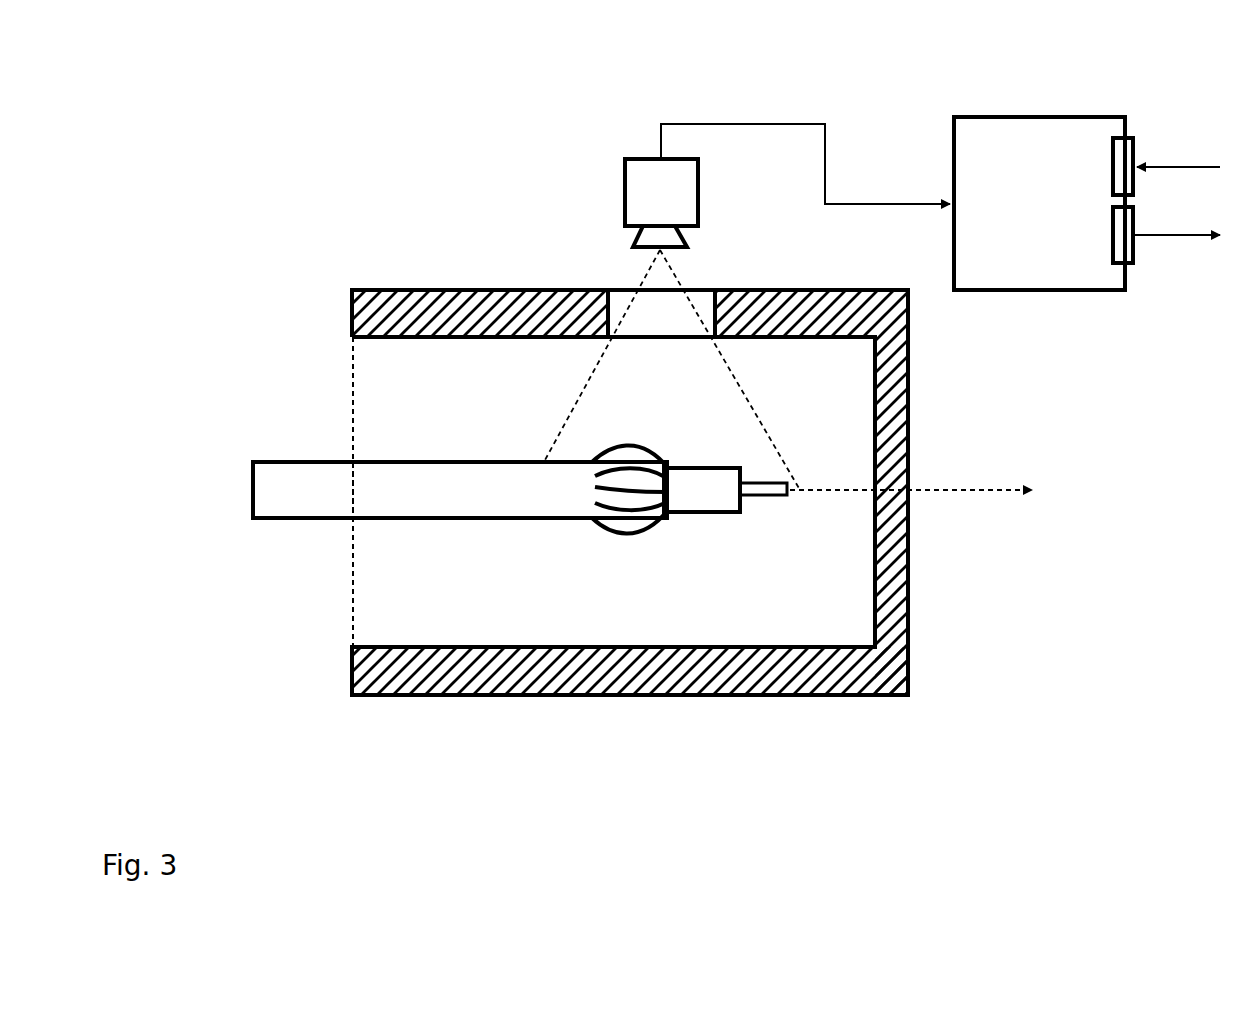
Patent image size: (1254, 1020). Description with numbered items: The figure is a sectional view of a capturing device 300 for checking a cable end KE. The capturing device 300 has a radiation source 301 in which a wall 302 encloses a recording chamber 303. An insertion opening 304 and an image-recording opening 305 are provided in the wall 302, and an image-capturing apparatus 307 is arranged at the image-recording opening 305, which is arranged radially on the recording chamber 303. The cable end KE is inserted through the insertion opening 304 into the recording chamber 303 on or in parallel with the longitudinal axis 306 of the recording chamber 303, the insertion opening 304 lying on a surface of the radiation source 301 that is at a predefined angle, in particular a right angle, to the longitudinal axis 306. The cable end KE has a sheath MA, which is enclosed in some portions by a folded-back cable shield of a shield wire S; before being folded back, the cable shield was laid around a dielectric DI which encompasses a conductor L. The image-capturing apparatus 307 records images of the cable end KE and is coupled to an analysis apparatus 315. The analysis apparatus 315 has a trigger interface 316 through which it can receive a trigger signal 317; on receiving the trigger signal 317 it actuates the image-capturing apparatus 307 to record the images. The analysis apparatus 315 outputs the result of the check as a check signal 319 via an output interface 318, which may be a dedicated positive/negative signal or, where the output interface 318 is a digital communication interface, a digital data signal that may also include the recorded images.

The capturing device 300 is at (272, 760).
The radiation source 301 is at (883, 696).
The wall 302 is at (410, 320).
The recording chamber 303 is at (396, 391).
The insertion opening 304 is at (350, 602).
The image-recording opening 305 is at (712, 291).
The longitudinal axis 306 is at (998, 490).
The image-capturing apparatus 307 is at (625, 168).
The analysis apparatus 315 is at (1058, 290).
The trigger interface 316 is at (1137, 140).
The trigger signal 317 is at (1200, 167).
The output interface 318 is at (1135, 263).
The check signal 319 is at (1200, 235).
The cable end KE is at (253, 490).
The sheath MA is at (450, 520).
The shield wire S is at (620, 530).
The dielectric DI is at (720, 515).
The conductor L is at (781, 500).